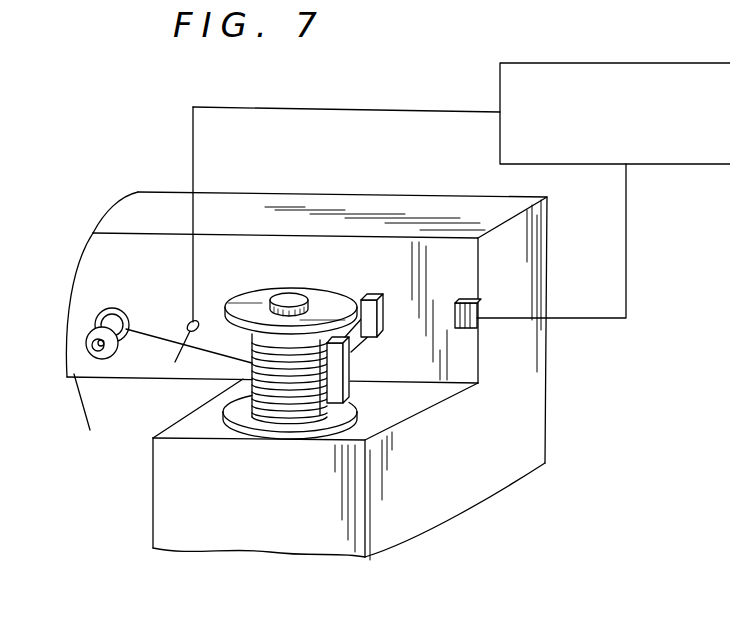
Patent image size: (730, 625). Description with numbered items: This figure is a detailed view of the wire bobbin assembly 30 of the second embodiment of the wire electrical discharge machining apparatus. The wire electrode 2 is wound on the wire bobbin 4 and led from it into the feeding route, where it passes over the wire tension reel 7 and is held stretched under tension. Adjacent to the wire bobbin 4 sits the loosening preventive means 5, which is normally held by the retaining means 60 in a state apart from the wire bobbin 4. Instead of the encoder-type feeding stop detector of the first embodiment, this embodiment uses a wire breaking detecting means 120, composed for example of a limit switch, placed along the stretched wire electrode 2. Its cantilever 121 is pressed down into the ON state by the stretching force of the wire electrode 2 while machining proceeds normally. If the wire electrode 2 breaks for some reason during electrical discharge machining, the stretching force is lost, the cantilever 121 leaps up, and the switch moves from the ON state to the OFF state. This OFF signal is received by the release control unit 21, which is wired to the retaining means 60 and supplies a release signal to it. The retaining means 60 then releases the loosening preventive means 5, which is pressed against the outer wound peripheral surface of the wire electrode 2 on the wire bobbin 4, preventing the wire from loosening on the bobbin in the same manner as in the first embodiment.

The wire electrode 2 is at (282, 414).
The wire bobbin 4 is at (335, 301).
The loosening preventive means 5 is at (368, 350).
The wire tension reel 7 is at (96, 330).
The release control unit 21 is at (685, 164).
The wire bobbin assembly 30 is at (563, 374).
The retaining means 60 is at (479, 308).
The wire breaking detecting means 120 is at (200, 318).
The cantilever 121 is at (173, 354).